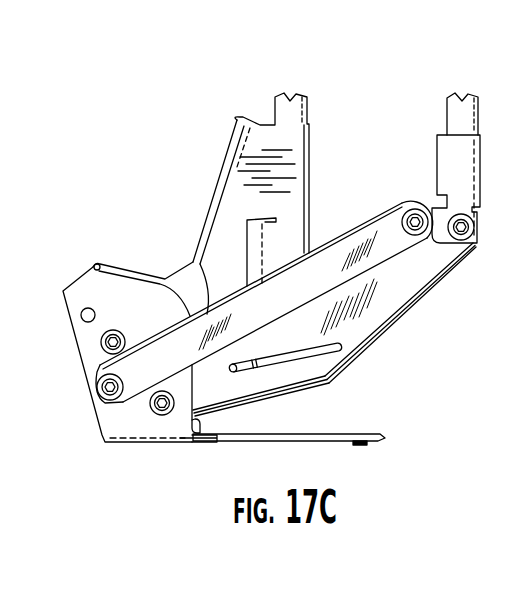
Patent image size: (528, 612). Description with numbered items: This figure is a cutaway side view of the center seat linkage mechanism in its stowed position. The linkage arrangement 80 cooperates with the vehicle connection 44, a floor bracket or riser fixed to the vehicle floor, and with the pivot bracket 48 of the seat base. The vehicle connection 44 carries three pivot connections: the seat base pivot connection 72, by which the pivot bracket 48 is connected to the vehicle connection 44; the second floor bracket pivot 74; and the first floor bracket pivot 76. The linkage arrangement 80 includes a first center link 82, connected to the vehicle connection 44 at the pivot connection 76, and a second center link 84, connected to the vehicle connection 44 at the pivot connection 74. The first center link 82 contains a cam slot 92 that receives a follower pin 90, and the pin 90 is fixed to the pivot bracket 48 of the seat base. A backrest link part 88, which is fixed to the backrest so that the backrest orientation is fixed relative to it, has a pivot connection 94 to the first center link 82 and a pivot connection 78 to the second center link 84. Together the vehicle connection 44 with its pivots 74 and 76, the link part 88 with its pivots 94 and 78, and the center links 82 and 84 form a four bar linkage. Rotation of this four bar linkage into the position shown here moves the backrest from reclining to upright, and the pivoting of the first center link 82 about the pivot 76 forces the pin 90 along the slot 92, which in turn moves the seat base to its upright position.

The linkage arrangement 80 is at (353, 112).
The pivot bracket 48 is at (215, 201).
The backrest link part 88 is at (435, 212).
The pivot connection 78 is at (410, 214).
The pivot connection 94 is at (468, 228).
The second center link 84 is at (207, 315).
The vehicle connection 44 is at (143, 415).
The seat base pivot connection 72 is at (99, 347).
The second floor bracket pivot 74 is at (98, 385).
The first floor bracket pivot 76 is at (162, 416).
The first center link 82 is at (384, 305).
The follower pin 90 is at (207, 396).
The cam slot 92 is at (290, 362).